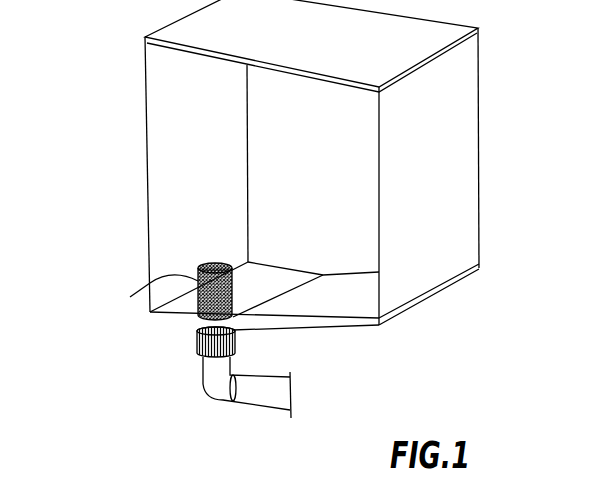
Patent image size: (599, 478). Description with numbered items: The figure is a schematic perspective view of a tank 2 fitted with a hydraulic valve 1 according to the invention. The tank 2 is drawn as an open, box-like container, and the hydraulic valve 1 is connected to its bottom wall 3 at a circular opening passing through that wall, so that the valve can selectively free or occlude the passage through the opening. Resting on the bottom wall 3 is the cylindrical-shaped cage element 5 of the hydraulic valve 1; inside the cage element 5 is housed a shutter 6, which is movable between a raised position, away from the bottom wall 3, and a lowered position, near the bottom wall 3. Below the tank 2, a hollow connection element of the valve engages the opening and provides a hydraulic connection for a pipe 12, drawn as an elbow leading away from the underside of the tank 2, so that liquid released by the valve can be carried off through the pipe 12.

The hydraulic valve 1 is at (116, 262).
The tank 2 is at (110, 82).
The bottom wall 3 is at (267, 282).
The cage element 5 is at (200, 272).
The shutter 6 is at (200, 328).
The pipe 12 is at (182, 386).